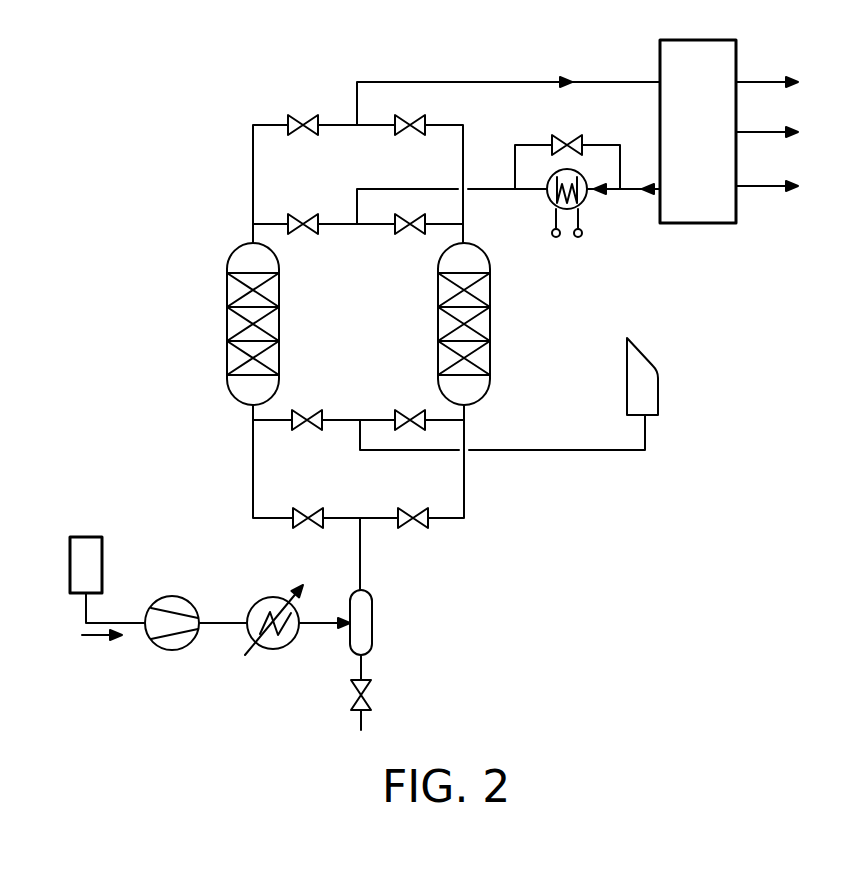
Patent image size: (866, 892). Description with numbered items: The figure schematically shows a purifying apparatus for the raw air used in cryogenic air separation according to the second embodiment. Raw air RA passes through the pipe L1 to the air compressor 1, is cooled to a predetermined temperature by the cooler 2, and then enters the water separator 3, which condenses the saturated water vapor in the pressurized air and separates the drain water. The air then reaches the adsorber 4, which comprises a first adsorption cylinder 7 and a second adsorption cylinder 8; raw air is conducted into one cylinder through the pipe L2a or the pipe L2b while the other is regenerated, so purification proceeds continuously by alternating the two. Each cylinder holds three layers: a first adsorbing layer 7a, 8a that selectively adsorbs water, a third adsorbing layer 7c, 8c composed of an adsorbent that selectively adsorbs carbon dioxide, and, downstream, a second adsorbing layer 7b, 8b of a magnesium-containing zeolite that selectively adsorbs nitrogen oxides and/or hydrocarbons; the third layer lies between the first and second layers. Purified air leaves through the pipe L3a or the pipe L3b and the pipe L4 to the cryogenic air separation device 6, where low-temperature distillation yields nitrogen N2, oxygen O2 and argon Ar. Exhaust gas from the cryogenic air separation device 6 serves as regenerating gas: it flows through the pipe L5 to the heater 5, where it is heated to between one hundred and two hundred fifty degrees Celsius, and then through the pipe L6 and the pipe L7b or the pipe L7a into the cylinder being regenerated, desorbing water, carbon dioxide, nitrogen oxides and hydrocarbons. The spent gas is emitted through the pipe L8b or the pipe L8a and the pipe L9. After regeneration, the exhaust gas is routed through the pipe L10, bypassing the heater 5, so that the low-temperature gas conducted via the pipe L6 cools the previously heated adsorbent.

The air compressor 1 is at (187, 648).
The cooler 2 is at (280, 648).
The water separator 3 is at (373, 615).
The adsorber 4 is at (203, 266).
The heater 5 is at (588, 203).
The cryogenic air separation device 6 is at (712, 224).
The first adsorption cylinder 7 is at (227, 301).
The first adsorbing layer 7a is at (277, 359).
The second adsorbing layer 7b is at (277, 290).
The third adsorbing layer 7c is at (277, 324).
The second adsorption cylinder 8 is at (490, 303).
The first adsorbing layer 8a is at (442, 360).
The second adsorbing layer 8b is at (442, 290).
The third adsorbing layer 8c is at (442, 325).
The pipe L1 is at (122, 622).
The pipe L2a is at (253, 470).
The pipe L2b is at (443, 519).
The pipe L3a is at (253, 150).
The pipe L3b is at (465, 143).
The pipe L4 is at (458, 81).
The pipe L5 is at (630, 190).
The pipe L6 is at (483, 191).
The pipe L7a is at (338, 222).
The pipe L7b is at (442, 222).
The pipe L8a is at (331, 413).
The pipe L8b is at (379, 413).
The pipe L9 is at (543, 451).
The pipe L10 is at (597, 144).
The raw air RA is at (93, 638).
The oxygen O2 is at (784, 84).
The nitrogen N2 is at (784, 134).
The argon Ar is at (783, 186).